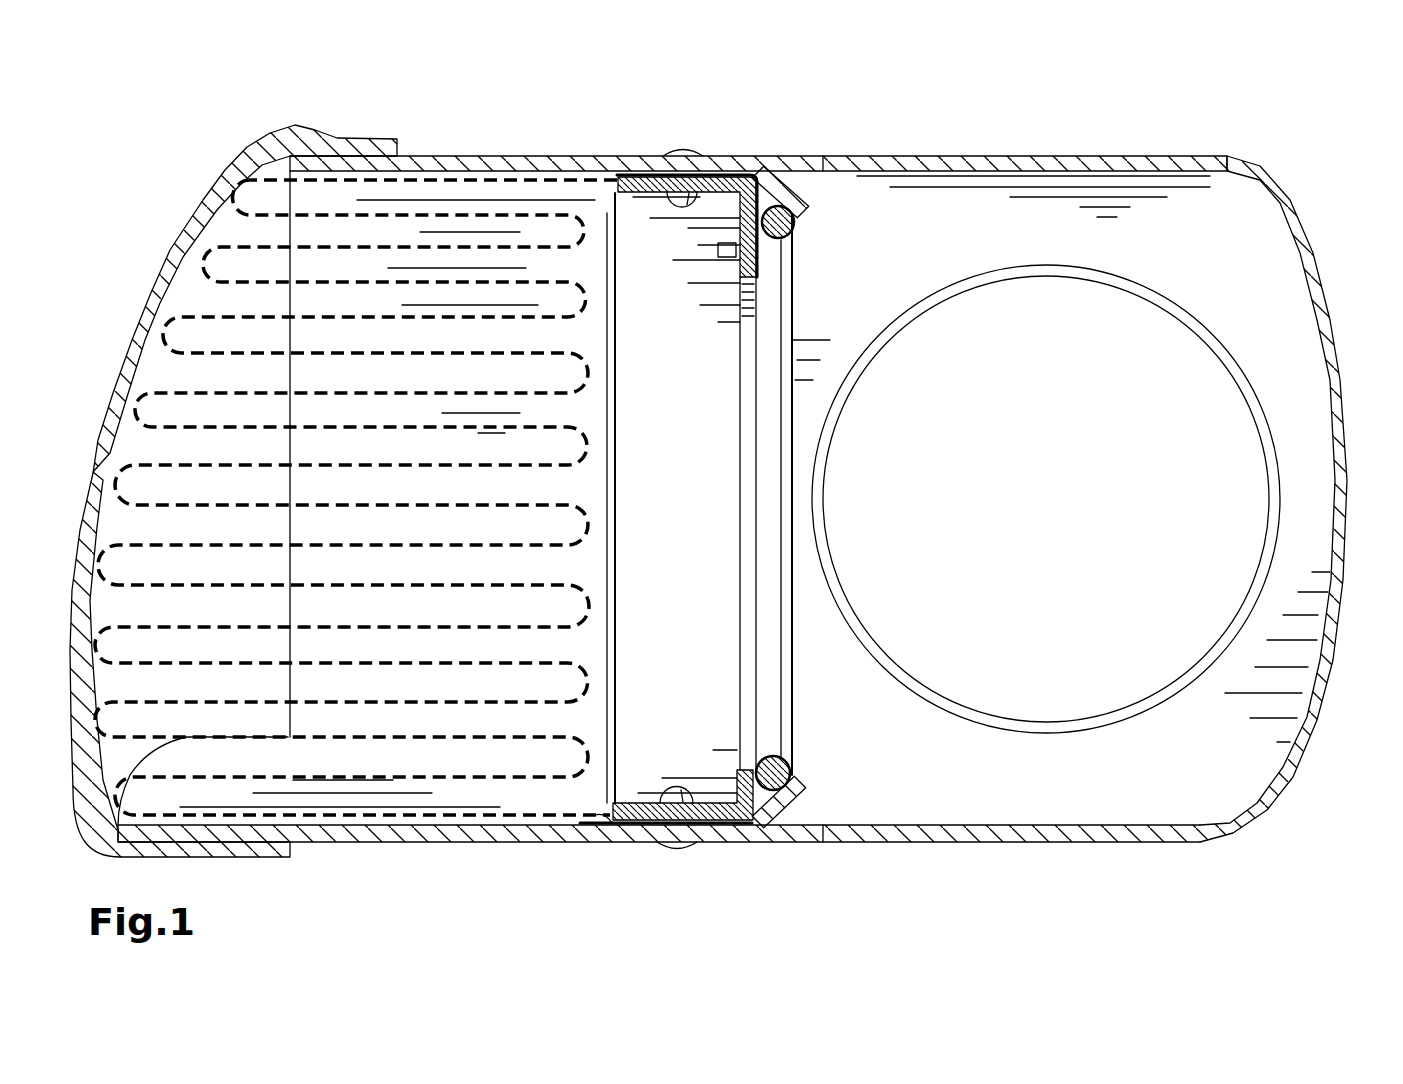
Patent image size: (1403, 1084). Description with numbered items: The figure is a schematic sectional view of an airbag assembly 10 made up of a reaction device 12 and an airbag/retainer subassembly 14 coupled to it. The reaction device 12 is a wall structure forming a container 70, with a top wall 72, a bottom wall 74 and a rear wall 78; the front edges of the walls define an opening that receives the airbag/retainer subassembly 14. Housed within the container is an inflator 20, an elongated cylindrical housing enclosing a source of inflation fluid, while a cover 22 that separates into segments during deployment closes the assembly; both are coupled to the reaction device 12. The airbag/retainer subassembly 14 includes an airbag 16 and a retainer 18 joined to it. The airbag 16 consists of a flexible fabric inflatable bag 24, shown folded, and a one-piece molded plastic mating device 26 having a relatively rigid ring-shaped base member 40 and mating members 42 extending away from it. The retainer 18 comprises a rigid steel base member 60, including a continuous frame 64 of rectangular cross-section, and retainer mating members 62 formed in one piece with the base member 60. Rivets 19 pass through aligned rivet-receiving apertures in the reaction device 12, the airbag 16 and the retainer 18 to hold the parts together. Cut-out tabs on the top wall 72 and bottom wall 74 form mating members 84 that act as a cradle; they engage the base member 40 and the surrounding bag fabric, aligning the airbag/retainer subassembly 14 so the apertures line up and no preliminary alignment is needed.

The airbag assembly 10 is at (1228, 924).
The reaction device 12 is at (1005, 150).
The airbag/retainer subassembly 14 is at (627, 836).
The airbag 16 is at (465, 180).
The retainer 18 is at (723, 822).
The rivets 19 is at (690, 150).
The inflator 20 is at (1246, 387).
The cover 22 is at (178, 245).
The inflatable bag 24 is at (470, 778).
The mating device 26 is at (773, 677).
The base member 40 is at (793, 768).
The mating members 42 is at (725, 255).
The base member 60 is at (617, 179).
The retainer mating members 62 is at (757, 268).
The frame 64 is at (647, 172).
The container 70 is at (1232, 251).
The top wall 72 is at (1146, 160).
The bottom wall 74 is at (998, 845).
The rear wall 78 is at (1335, 660).
The mating members 84 is at (797, 198).